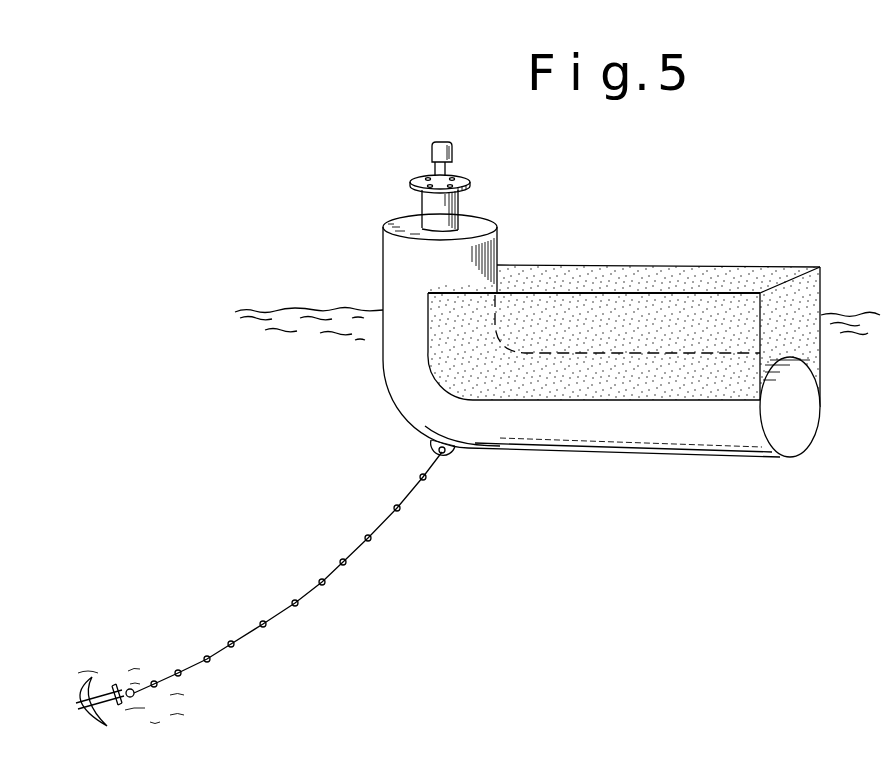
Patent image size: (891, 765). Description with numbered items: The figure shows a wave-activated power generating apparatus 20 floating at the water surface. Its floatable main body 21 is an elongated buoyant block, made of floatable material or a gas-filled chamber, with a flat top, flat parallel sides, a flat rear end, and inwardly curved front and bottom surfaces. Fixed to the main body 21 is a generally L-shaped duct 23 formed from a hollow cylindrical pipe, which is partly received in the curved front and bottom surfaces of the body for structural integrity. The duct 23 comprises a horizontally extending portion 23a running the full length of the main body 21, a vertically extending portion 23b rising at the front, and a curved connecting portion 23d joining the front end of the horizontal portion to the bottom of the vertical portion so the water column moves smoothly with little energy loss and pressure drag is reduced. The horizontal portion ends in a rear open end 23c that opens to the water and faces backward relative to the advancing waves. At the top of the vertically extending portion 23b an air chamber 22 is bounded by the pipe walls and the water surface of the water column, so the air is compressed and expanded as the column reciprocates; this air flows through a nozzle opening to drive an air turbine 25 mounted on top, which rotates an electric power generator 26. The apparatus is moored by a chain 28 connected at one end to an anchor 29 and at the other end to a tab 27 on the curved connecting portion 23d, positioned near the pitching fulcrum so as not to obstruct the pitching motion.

The wave-activated power generating apparatus 20 is at (590, 322).
The floatable main body 21 is at (667, 262).
The air chamber 22 is at (383, 272).
The L-shaped duct 23 is at (590, 322).
The horizontally extending portion 23a is at (715, 457).
The vertically extending portion 23b is at (404, 368).
The rear open end 23c is at (811, 412).
The curved connecting portion 23d is at (404, 424).
The air turbine 25 is at (470, 183).
The electric power generator 26 is at (454, 152).
The tab 27 is at (448, 458).
The chain 28 is at (315, 590).
The anchor 29 is at (108, 690).